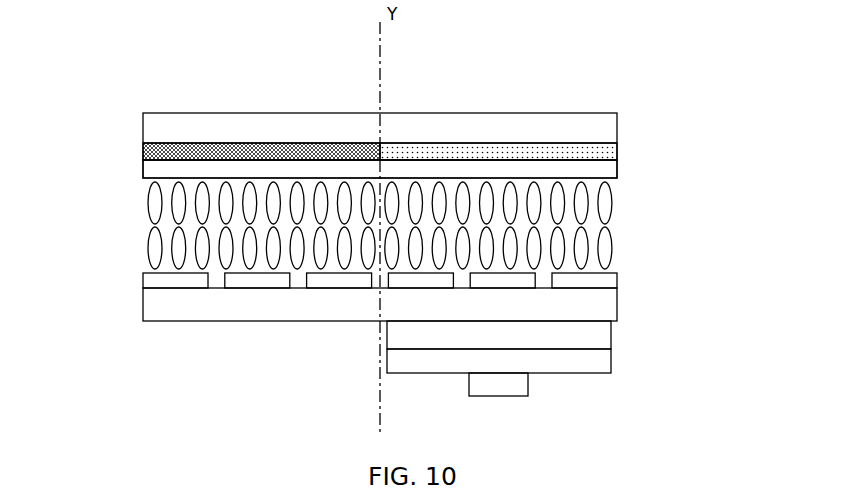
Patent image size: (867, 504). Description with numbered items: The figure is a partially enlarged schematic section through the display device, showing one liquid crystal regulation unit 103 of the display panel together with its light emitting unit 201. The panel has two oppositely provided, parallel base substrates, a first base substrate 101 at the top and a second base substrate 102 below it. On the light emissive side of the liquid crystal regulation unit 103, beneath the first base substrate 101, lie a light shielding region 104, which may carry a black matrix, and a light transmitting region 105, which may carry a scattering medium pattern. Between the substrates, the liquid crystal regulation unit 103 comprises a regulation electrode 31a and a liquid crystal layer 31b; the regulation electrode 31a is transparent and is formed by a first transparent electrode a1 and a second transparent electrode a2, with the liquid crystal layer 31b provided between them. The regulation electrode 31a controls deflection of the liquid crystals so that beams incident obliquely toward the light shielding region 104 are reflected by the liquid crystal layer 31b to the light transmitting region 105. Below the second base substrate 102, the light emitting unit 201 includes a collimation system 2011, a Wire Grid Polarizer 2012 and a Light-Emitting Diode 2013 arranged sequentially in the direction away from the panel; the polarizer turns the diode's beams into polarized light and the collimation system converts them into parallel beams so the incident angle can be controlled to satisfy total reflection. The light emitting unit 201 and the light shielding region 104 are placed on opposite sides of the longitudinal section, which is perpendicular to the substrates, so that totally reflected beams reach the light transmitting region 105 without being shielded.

The first base substrate 101 is at (143, 125).
The second base substrate 102 is at (143, 308).
The liquid crystal regulation unit 103 is at (134, 162).
The light shielding region 104 is at (261, 111).
The light transmitting region 105 is at (507, 111).
The first transparent electrode a1 is at (617, 167).
The second transparent electrode a2 is at (617, 282).
The regulation electrode 31a is at (710, 216).
The liquid crystal layer 31b is at (628, 182).
The light emitting unit 201 is at (581, 359).
The collimation system 2011 is at (611, 338).
The Wire Grid Polarizer 2012 is at (611, 361).
The Light-Emitting Diode 2013 is at (528, 387).